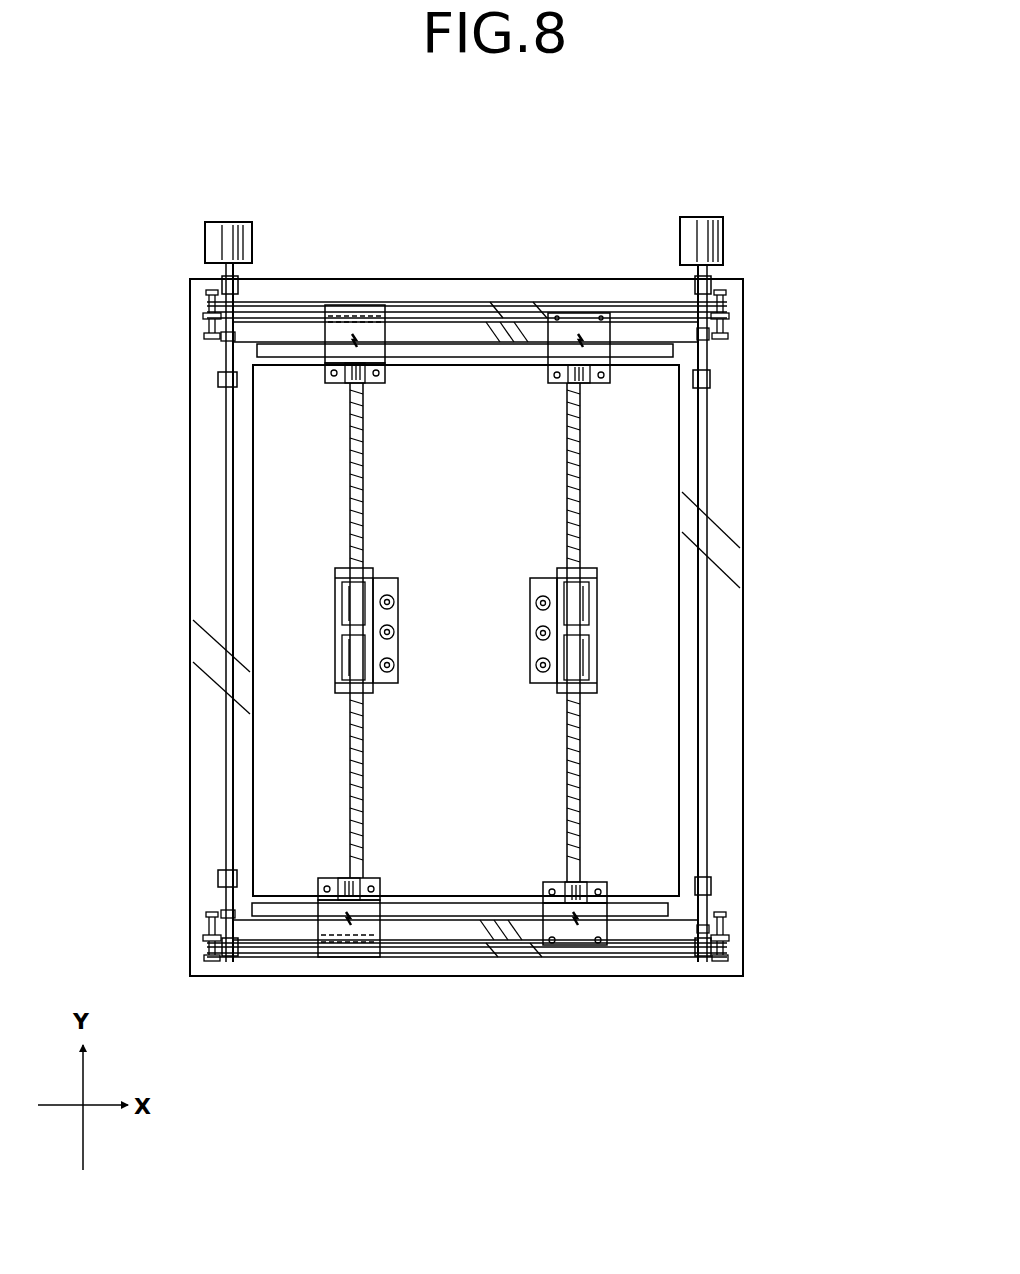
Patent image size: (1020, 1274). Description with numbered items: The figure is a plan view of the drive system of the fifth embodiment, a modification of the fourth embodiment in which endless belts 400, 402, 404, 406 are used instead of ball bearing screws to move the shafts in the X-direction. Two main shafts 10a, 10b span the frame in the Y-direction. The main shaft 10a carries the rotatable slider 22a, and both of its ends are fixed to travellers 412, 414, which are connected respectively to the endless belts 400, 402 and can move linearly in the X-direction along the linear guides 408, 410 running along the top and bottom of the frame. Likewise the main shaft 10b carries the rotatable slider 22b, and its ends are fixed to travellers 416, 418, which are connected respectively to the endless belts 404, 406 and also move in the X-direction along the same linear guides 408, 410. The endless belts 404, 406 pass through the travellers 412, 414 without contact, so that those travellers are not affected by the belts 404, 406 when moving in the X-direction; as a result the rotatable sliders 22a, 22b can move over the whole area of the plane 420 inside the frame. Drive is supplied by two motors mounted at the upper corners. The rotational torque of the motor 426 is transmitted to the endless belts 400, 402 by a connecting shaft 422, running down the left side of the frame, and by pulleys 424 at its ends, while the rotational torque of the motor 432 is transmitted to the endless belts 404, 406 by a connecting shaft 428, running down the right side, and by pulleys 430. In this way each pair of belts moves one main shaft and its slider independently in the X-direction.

The endless belt 400 is at (540, 300).
The endless belt 402 is at (548, 958).
The endless belt 404 is at (490, 342).
The endless belt 406 is at (450, 940).
The linear guide 408 is at (300, 357).
The linear guide 410 is at (305, 916).
The traveller 412 is at (360, 310).
The traveller 414 is at (360, 957).
The traveller 416 is at (590, 320).
The traveller 418 is at (605, 945).
The plane 420 is at (495, 534).
The connecting shaft 422 is at (226, 503).
The pulley 424 is at (215, 305).
The motor 426 is at (213, 232).
The connecting shaft 428 is at (707, 587).
The pulley 430 is at (212, 330).
The motor 432 is at (725, 235).
The main shaft 10a is at (363, 770).
The main shaft 10b is at (567, 832).
The rotatable slider 22a is at (334, 635).
The rotatable slider 22b is at (600, 628).